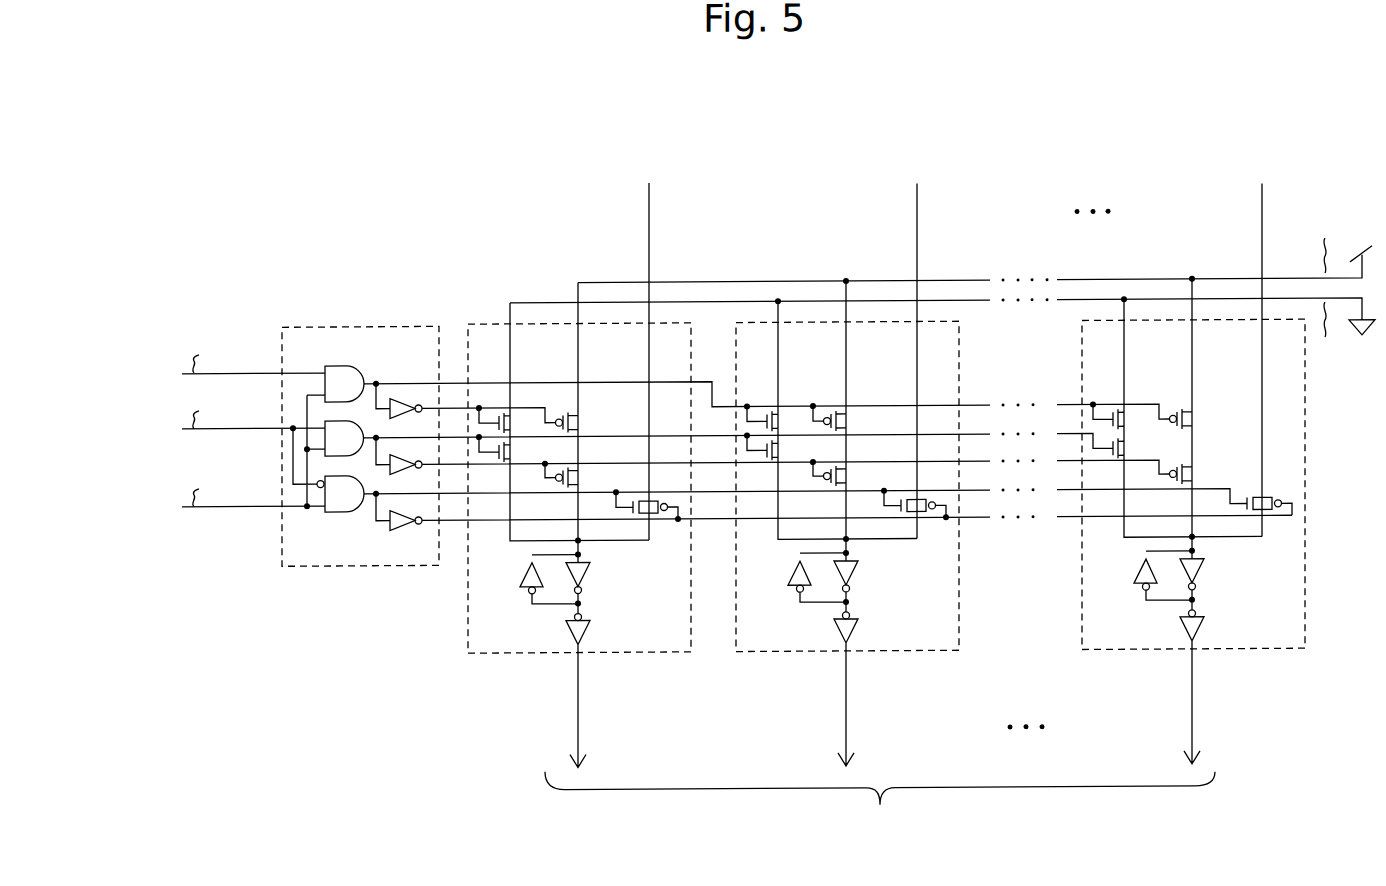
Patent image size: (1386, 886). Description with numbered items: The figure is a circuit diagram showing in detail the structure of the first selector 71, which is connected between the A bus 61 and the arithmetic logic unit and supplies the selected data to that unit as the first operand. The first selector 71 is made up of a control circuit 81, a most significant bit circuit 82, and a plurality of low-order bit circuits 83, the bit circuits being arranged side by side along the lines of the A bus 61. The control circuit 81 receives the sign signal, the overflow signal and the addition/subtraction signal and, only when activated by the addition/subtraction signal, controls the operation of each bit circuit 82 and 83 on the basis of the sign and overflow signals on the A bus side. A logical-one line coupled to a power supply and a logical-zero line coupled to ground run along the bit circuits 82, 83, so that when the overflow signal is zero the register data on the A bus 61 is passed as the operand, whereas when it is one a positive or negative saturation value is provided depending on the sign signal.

The first selector 71 is at (268, 214).
The A bus 61 is at (1277, 175).
The control circuit 81 is at (400, 565).
The most significant bit circuit 82 is at (662, 654).
The low-order bit circuit 83 is at (932, 655).